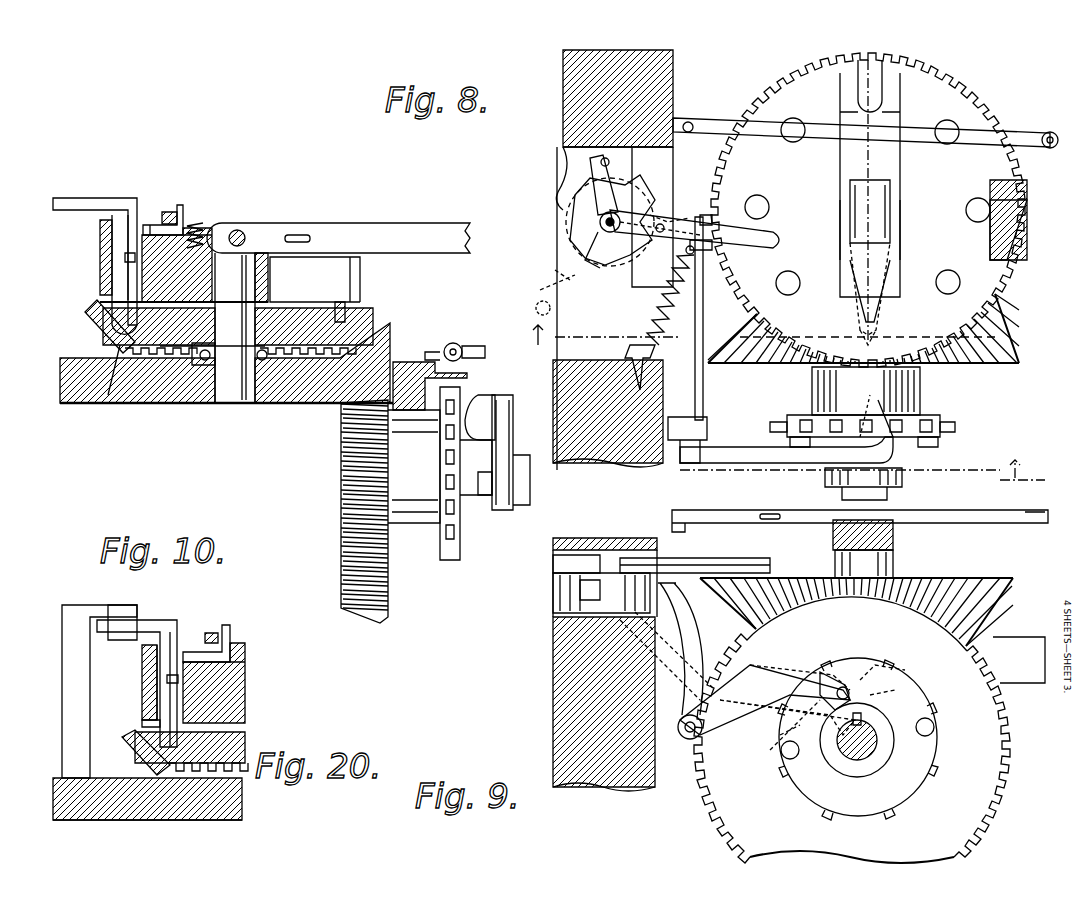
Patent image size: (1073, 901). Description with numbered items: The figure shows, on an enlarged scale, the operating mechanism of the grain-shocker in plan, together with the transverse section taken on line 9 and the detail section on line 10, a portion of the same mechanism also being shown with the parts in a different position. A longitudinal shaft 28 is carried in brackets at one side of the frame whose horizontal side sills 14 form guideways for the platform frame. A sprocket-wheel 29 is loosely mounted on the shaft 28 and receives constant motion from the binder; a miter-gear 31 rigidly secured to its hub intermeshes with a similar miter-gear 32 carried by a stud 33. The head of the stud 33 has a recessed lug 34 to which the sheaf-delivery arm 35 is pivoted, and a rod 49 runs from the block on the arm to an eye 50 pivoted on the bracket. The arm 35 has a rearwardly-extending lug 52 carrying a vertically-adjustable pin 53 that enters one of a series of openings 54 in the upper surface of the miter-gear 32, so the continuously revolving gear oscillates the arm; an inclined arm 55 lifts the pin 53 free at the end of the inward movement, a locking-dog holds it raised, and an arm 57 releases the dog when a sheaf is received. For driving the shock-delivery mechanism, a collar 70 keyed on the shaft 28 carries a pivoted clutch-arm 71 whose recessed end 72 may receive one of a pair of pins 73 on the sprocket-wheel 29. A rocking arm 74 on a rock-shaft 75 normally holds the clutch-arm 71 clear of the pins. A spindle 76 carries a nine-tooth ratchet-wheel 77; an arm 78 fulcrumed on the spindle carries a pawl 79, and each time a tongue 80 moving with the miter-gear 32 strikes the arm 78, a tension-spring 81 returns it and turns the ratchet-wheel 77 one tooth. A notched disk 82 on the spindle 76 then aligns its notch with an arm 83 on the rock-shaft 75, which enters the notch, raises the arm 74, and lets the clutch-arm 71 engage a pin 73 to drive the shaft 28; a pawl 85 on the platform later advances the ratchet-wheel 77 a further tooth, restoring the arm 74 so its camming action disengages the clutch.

In FIG. 8, the section line 9 9 is at (782, 415).
In FIG. 8, the section line 10 10 is at (870, 78).
In FIG. 9, the horizontal side sills 14 is at (575, 707).
In FIG. 8, the shaft 28 is at (515, 485).
In FIG. 9, the shaft 28 is at (850, 755).
In FIG. 8, the sprocket-wheel 29 is at (448, 560).
In FIG. 9, the sprocket-wheel 29 is at (885, 670).
In FIG. 8, the miter-gear 31 is at (355, 595).
In FIG. 9, the miter-gear 31 is at (869, 730).
In FIG. 8, the miter-gear 32 is at (95, 335).
In FIG. 9, the miter-gear 32 is at (975, 575).
In FIG. 10, the miter-gear 32 is at (140, 750).
In FIG. 8, the stud 33 is at (230, 388).
In FIG. 8, the recessed lug 34 is at (248, 230).
In FIG. 8, the arm 35 is at (395, 235).
In FIG. 9, the arm 35 is at (893, 543).
In FIG. 8, the rod 49 is at (478, 345).
In FIG. 8, the eye 50 is at (453, 343).
In FIG. 8, the rearwardly-extending lug 52 is at (100, 283).
In FIG. 10, the rearwardly-extending lug 52 is at (142, 690).
In FIG. 8, the vertically-adjustable pin 53 is at (120, 297).
In FIG. 10, the vertically-adjustable pin 53 is at (167, 710).
In FIG. 8, the openings 54 is at (345, 312).
In FIG. 10, the openings 54 is at (142, 732).
In FIG. 8, the arm 55 is at (1002, 196).
In FIG. 10, the arm 55 is at (122, 612).
In FIG. 8, the arm 57 is at (165, 212).
In FIG. 10, the arm 57 is at (212, 632).
In FIG. 8, the collar 70 is at (512, 420).
In FIG. 9, the collar 70 is at (872, 760).
In FIG. 8, the clutch-arm 71 is at (487, 395).
In FIG. 9, the clutch-arm 71 is at (780, 678).
In FIG. 8, the recessed end 72 is at (872, 390).
In FIG. 9, the recessed end 72 is at (885, 710).
In FIG. 8, the projecting pins 73 is at (488, 495).
In FIG. 9, the projecting pins 73 is at (782, 756).
In FIG. 8, the rocking arm 74 is at (728, 463).
In FIG. 9, the rocking arm 74 is at (745, 705).
In FIG. 9, the rock-shaft 75 is at (690, 740).
In FIG. 8, the spindle 76 is at (598, 224).
In FIG. 9, the spindle 76 is at (598, 540).
In FIG. 8, the ratchet-wheel 77 is at (590, 205).
In FIG. 9, the ratchet-wheel 77 is at (568, 584).
In FIG. 8, the arm 78 is at (778, 240).
In FIG. 9, the arm 78 is at (752, 572).
In FIG. 8, the pawl 79 is at (690, 215).
In FIG. 9, the pawl 79 is at (682, 649).
In FIG. 8, the tongue 80 is at (862, 322).
In FIG. 8, the tension-spring 81 is at (655, 318).
In FIG. 8, the notched disk 82 is at (590, 258).
In FIG. 9, the notched disk 82 is at (565, 607).
In FIG. 8, the arm 83 is at (662, 220).
In FIG. 9, the arm 83 is at (667, 656).
In FIG. 8, the pawl 85 is at (545, 300).